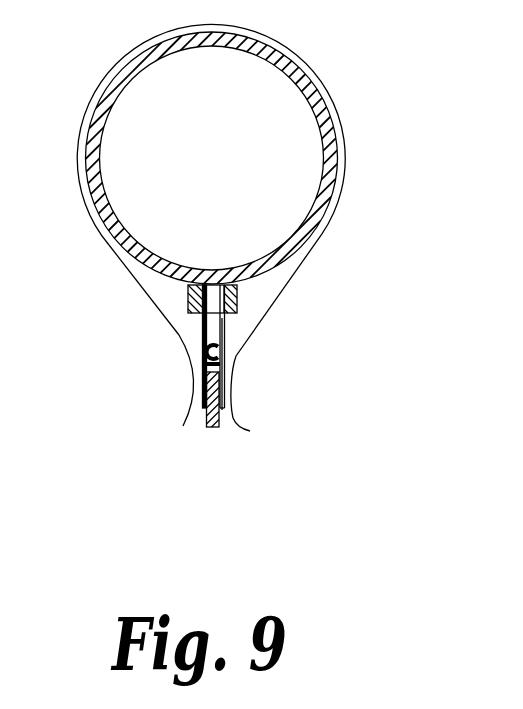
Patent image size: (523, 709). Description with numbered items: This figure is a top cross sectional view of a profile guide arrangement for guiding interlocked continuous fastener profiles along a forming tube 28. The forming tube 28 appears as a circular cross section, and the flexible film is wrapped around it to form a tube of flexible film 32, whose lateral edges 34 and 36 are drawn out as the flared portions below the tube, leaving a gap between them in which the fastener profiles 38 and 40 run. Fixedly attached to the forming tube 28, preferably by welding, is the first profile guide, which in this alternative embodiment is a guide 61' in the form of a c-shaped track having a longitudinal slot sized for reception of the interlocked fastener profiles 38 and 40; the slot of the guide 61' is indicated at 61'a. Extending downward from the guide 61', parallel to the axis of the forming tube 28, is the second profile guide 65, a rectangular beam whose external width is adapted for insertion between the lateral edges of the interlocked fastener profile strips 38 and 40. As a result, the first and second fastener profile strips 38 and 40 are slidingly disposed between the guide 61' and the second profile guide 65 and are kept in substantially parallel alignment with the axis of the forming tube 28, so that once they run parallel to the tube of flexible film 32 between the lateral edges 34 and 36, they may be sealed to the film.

The forming tube 28 is at (308, 85).
The tube of flexible film 32 is at (348, 162).
The guide 61' is at (291, 297).
The bore of nut block 61'a is at (321, 337).
The fastener profile 38 is at (203, 337).
The fastener profile 40 is at (224, 368).
The second profile guide 65 is at (215, 427).
The lateral edge 34 is at (185, 418).
The lateral edge 36 is at (242, 427).